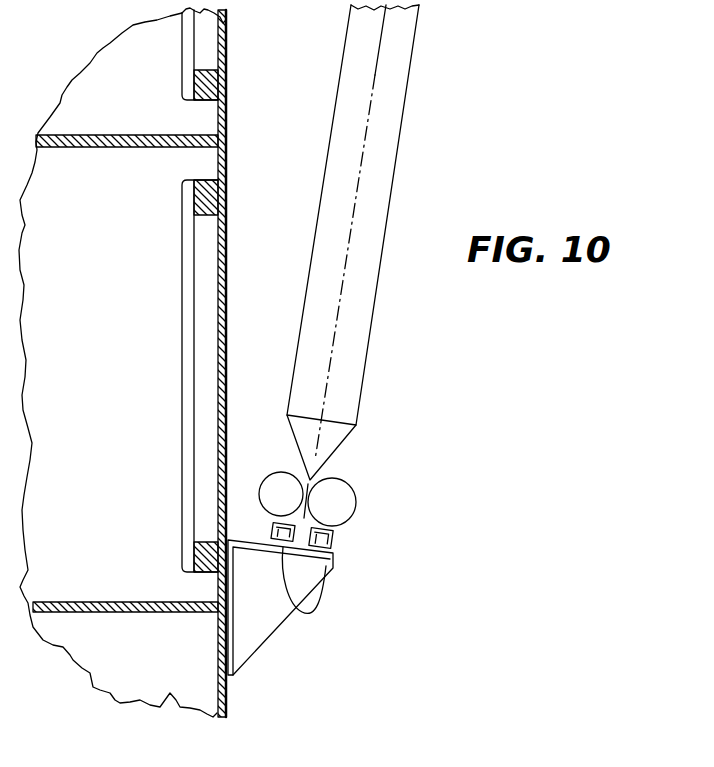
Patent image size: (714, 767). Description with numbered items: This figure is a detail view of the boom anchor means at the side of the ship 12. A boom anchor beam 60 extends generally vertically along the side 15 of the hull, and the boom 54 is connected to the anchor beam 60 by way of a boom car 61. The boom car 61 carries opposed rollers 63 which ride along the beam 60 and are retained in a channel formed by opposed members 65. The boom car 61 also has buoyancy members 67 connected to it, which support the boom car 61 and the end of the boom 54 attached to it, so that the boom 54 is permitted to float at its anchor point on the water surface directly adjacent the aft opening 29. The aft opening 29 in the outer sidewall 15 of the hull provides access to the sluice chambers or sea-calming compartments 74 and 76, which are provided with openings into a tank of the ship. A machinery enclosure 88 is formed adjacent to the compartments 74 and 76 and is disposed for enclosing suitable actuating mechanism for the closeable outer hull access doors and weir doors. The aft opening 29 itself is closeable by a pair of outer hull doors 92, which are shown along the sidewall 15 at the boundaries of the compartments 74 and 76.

The ship 12 is at (84, 696).
The side of the hull 15 is at (228, 702).
The aft opening 29 is at (196, 64).
The boom 54 is at (404, 113).
The boom anchor beam 60 is at (273, 642).
The boom car 61 is at (305, 500).
The rollers 63 is at (310, 592).
The opposed members 65 is at (338, 542).
The buoyancy members 67 is at (283, 471).
The sea-calming compartment 74 is at (112, 435).
The sea-calming compartment 76 is at (140, 120).
The machinery enclosure 88 is at (146, 704).
The outer hull doors 92 is at (182, 32).